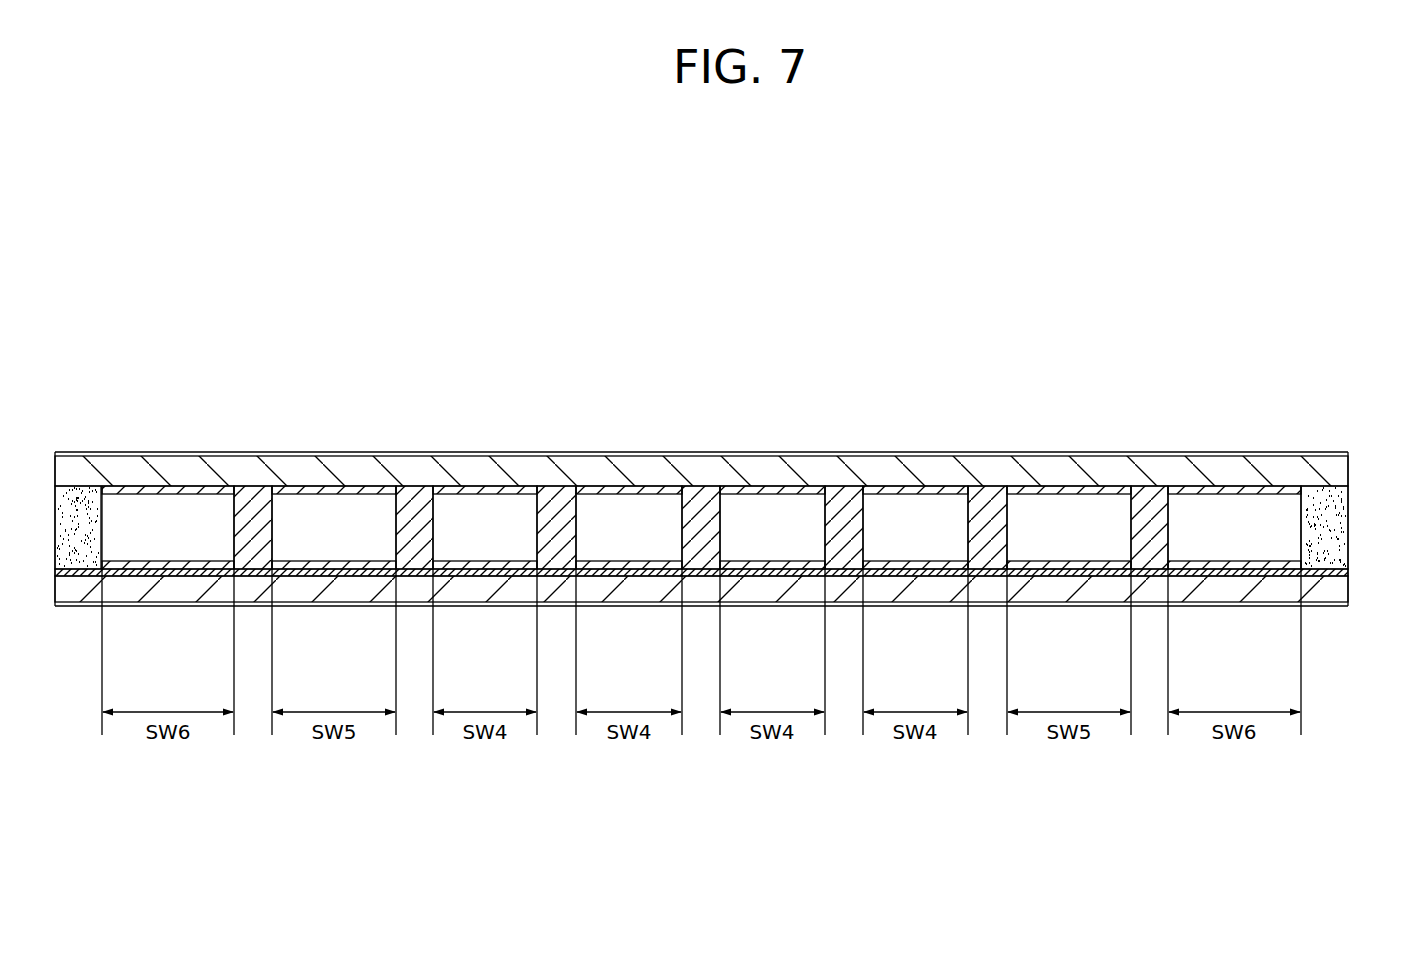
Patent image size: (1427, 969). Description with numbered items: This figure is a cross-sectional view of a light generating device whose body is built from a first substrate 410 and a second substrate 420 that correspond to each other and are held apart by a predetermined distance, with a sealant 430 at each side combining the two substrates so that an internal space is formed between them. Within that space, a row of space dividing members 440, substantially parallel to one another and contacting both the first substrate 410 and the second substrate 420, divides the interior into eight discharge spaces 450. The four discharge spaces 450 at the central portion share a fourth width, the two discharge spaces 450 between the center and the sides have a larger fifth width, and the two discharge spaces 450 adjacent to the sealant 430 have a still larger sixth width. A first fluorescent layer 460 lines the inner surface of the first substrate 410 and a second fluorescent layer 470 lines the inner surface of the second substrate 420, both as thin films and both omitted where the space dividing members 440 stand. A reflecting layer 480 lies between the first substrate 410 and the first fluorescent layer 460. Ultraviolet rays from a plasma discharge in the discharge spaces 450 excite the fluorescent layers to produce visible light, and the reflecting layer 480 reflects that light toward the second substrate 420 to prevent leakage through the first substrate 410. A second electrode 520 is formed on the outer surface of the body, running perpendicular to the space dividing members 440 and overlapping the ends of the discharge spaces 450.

The first substrate 410 is at (1345, 578).
The second substrate 420 is at (1345, 468).
The sealant 430 is at (1345, 530).
The space dividing member 440 is at (555, 503).
The discharge space 450 is at (352, 517).
The first fluorescent layer 460 is at (364, 564).
The second fluorescent layer 470 is at (490, 490).
The reflecting layer 480 is at (495, 575).
The second electrode 520 is at (1328, 452).